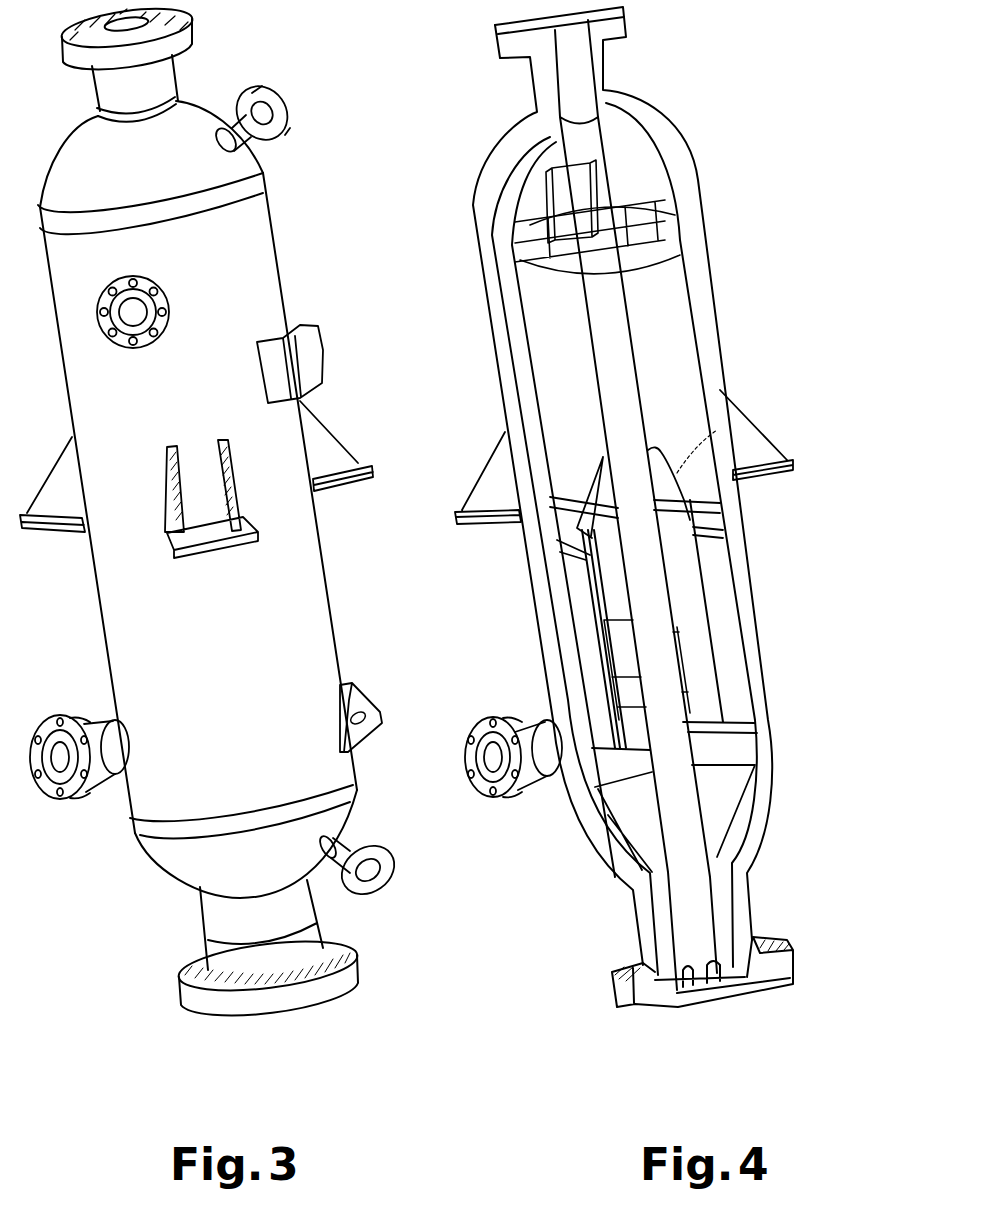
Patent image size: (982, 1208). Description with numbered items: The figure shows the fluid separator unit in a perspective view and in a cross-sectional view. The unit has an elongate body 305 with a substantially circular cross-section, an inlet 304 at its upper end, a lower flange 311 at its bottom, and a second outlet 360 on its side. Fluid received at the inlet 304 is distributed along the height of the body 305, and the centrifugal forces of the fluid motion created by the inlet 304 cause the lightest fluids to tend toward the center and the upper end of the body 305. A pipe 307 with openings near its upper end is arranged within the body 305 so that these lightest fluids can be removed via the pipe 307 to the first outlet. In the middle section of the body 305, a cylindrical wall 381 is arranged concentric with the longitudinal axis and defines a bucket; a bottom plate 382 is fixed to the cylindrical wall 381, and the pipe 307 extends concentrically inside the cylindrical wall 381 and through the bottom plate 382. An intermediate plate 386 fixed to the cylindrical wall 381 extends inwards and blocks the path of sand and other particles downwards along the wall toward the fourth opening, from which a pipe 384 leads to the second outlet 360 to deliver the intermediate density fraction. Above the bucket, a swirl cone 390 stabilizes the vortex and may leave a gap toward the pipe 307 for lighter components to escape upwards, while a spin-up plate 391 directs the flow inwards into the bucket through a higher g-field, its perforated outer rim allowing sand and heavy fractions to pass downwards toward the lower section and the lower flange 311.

In FIG. 3, the elongate body 305 is at (247, 248).
In FIG. 4, the elongate body 305 is at (662, 133).
In FIG. 3, the lower flange 311 is at (347, 973).
In FIG. 4, the lower flange 311 is at (773, 963).
In FIG. 4, the inlet 304 is at (612, 192).
In FIG. 4, the pipe 307 is at (622, 373).
In FIG. 4, the swirl cone 390 is at (673, 470).
In FIG. 4, the spin-up plate 391 is at (733, 512).
In FIG. 4, the cylindrical wall 381 is at (703, 578).
In FIG. 4, the intermediate plate 386 is at (717, 690).
In FIG. 4, the bottom plate 382 is at (737, 730).
In FIG. 4, the pipe 384 is at (603, 733).
In FIG. 4, the second outlet 360 is at (480, 787).